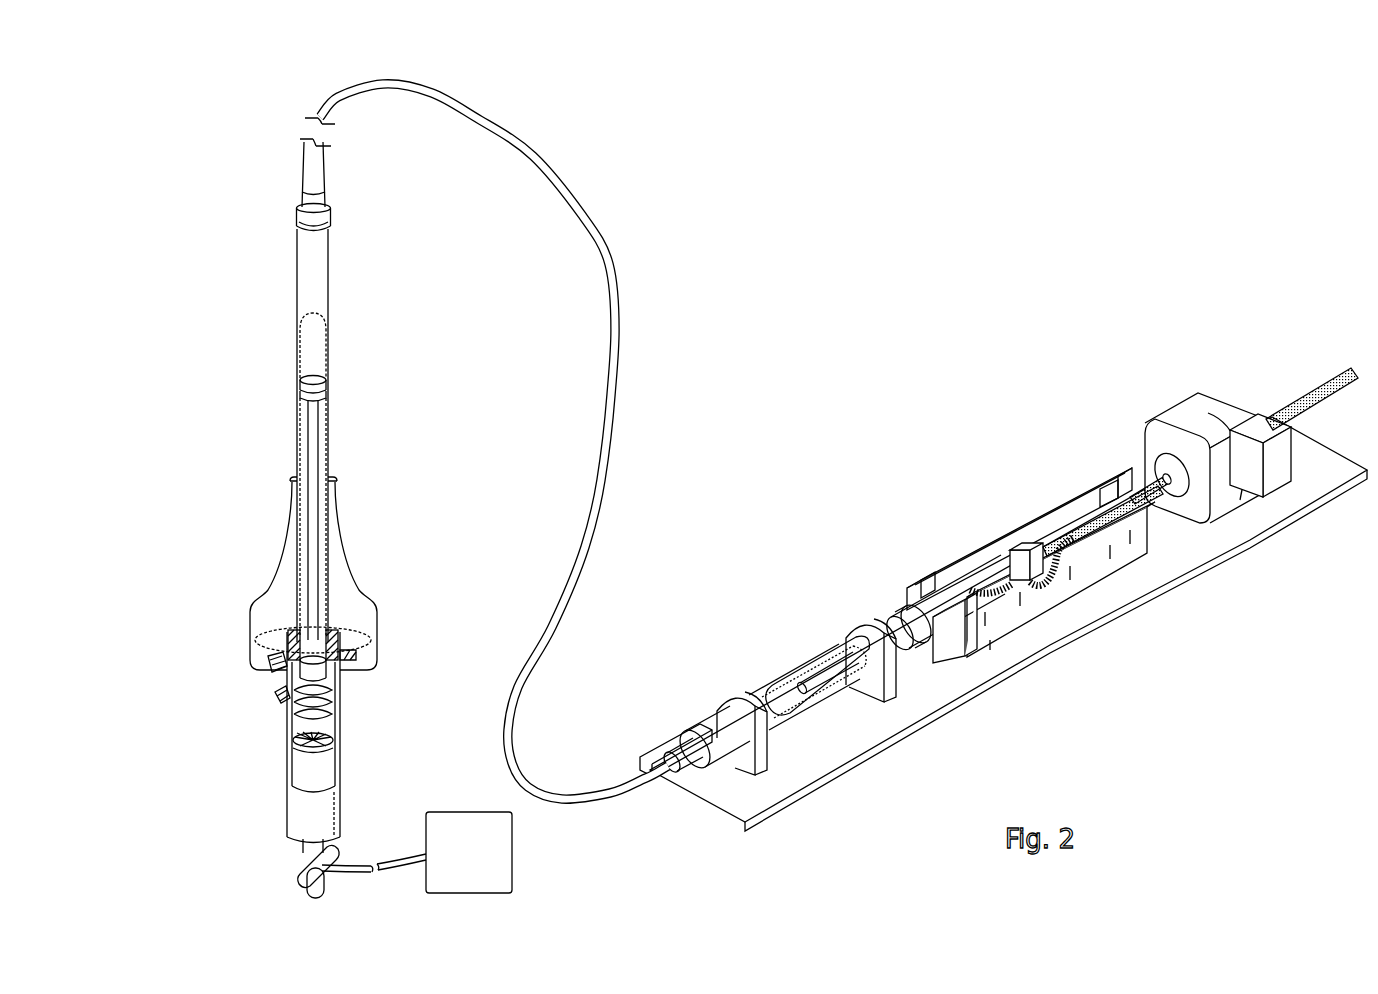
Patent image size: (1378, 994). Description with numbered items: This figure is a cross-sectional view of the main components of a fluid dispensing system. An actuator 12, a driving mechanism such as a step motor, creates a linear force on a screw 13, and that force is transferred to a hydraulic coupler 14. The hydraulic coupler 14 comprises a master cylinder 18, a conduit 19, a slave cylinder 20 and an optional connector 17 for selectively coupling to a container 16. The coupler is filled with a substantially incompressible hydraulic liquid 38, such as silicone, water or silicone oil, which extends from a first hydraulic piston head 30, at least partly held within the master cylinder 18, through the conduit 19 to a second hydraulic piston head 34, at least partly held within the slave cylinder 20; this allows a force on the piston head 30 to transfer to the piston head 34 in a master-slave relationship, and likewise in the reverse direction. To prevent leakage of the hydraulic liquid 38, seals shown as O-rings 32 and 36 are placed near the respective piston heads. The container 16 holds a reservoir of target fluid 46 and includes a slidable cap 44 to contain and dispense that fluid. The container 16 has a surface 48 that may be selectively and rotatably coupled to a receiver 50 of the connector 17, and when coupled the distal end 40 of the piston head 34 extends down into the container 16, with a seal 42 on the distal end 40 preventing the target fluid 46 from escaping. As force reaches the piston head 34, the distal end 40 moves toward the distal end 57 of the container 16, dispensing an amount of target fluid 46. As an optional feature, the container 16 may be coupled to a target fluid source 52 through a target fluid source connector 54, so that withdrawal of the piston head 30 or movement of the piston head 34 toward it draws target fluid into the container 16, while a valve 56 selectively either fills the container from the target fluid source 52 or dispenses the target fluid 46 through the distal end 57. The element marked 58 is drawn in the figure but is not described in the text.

The actuator 12 is at (1237, 486).
The screw 13 is at (1160, 496).
The hydraulic coupler 14 is at (640, 385).
The container 16 is at (338, 817).
The connector 17 is at (241, 571).
The master cylinder 18 is at (777, 723).
The conduit 19 is at (612, 264).
The slave cylinder 20 is at (329, 248).
The first hydraulic piston head 30 is at (803, 672).
The O-ring 32 is at (839, 684).
The second hydraulic piston head 34 is at (318, 381).
The O-ring 36 is at (321, 396).
The hydraulic liquid 38 is at (302, 345).
The distal end 40 is at (343, 722).
The seal 42 is at (334, 697).
The cap 44 is at (297, 750).
The target fluid 46 is at (290, 768).
The surface 48 is at (279, 701).
The receiver 50 is at (268, 672).
The target fluid source 52 is at (477, 887).
The target fluid source connector 54 is at (357, 876).
The valve 56 is at (331, 857).
The distal end 57 is at (307, 889).
The carriage 58 is at (1108, 478).